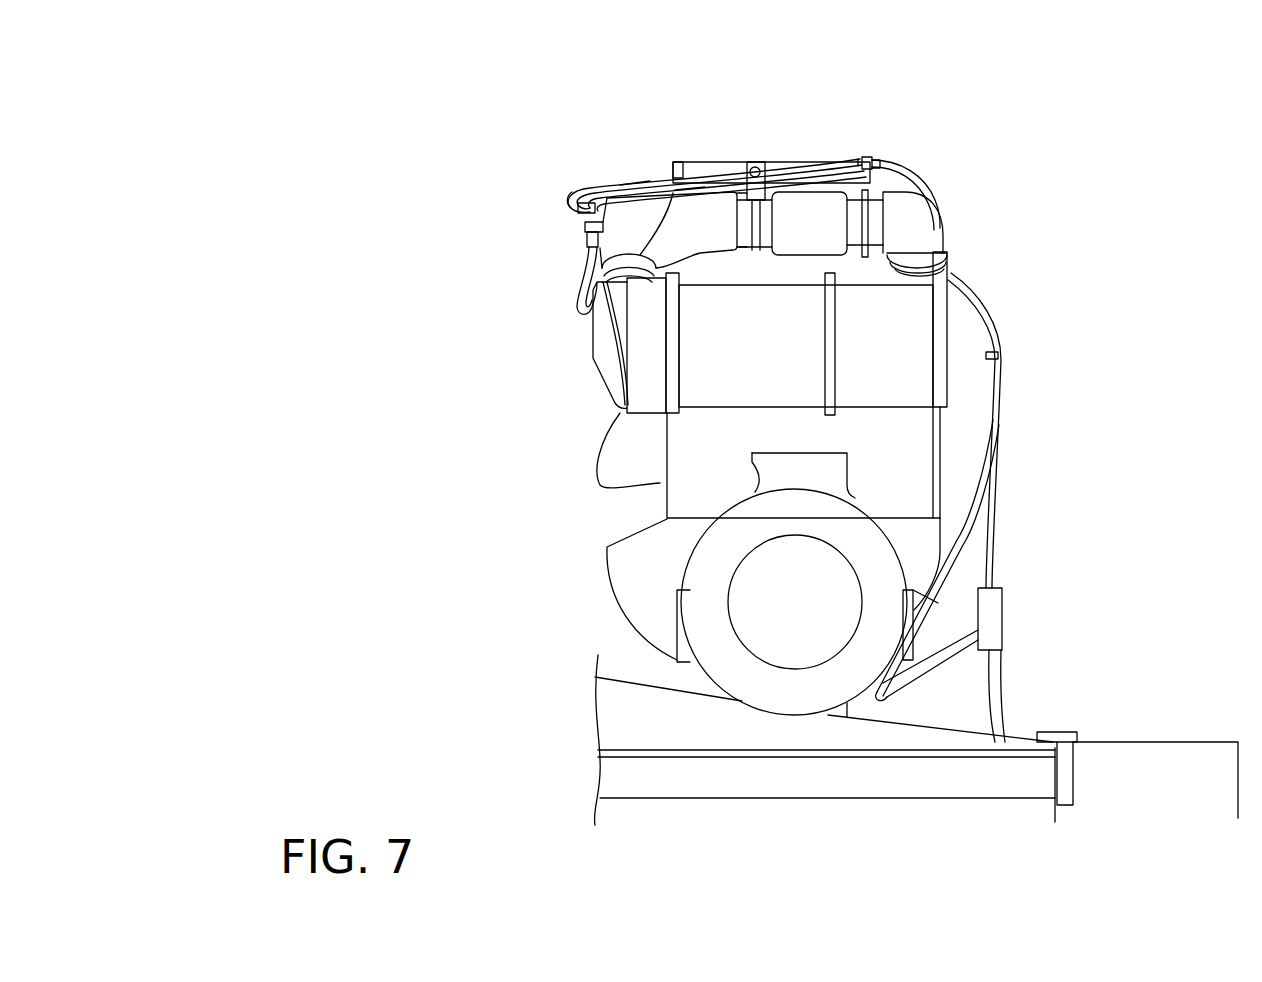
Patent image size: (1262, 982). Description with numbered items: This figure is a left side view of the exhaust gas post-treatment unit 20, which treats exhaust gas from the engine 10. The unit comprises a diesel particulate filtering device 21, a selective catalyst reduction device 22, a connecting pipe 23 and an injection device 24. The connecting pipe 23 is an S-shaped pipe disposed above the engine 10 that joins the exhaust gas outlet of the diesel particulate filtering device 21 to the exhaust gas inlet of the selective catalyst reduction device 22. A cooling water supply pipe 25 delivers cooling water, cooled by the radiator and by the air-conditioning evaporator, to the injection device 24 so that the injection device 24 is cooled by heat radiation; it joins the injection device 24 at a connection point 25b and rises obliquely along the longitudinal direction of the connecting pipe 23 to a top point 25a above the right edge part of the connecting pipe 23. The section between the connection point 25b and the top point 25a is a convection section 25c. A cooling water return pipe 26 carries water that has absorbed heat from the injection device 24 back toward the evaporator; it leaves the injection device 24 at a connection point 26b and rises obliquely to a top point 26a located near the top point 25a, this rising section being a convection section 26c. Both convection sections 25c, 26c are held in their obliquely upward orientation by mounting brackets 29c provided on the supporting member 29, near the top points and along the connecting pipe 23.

The engine 10 is at (656, 498).
The exhaust gas post-treatment unit 20 is at (1058, 186).
The diesel particulate filtering device 21 is at (603, 335).
The selective catalyst reduction device 22 is at (953, 280).
The connecting pipe 23 is at (945, 218).
The injection device 24 is at (587, 238).
The cooling water supply pipe 25 is at (922, 168).
The top point 25a is at (879, 158).
The connection point 25b is at (587, 211).
The convection section 25c is at (688, 184).
The cooling water return pipe 26 is at (601, 174).
The top point 26a is at (868, 158).
The connection point 26b is at (582, 199).
The convection section 26c is at (633, 182).
The supporting member 29 is at (728, 158).
The mounting brackets 29c is at (683, 160).